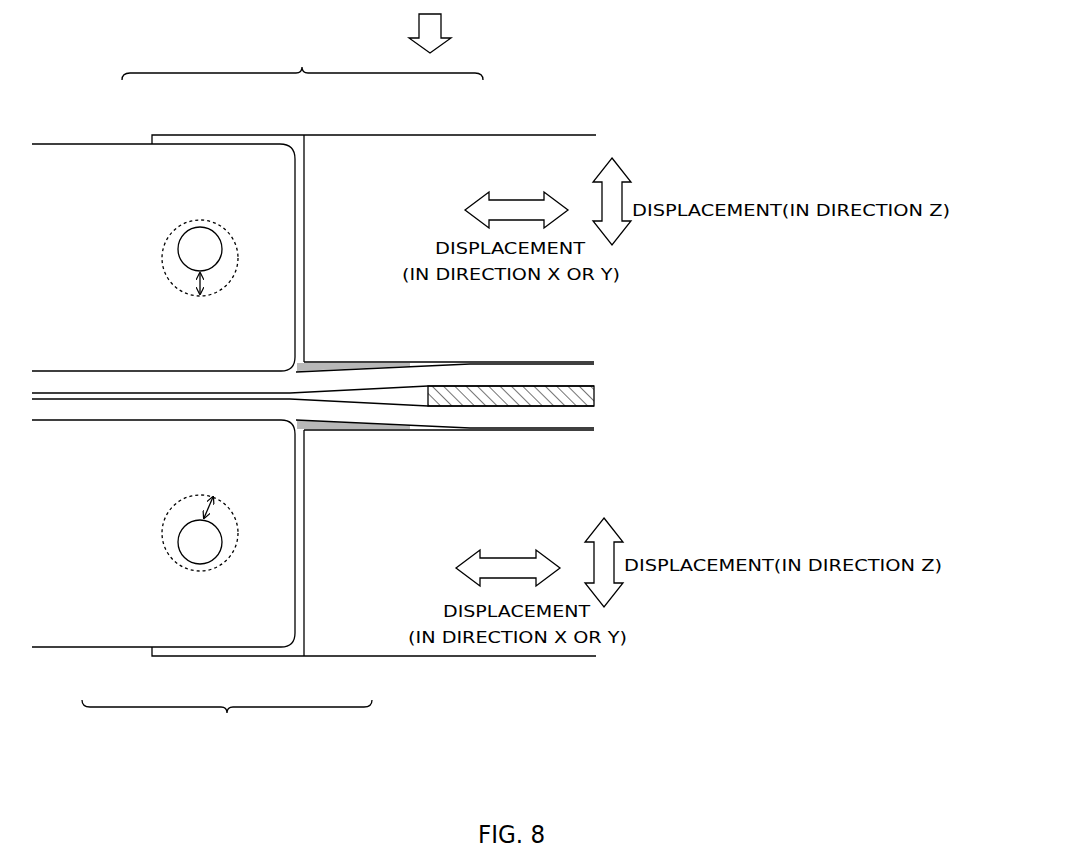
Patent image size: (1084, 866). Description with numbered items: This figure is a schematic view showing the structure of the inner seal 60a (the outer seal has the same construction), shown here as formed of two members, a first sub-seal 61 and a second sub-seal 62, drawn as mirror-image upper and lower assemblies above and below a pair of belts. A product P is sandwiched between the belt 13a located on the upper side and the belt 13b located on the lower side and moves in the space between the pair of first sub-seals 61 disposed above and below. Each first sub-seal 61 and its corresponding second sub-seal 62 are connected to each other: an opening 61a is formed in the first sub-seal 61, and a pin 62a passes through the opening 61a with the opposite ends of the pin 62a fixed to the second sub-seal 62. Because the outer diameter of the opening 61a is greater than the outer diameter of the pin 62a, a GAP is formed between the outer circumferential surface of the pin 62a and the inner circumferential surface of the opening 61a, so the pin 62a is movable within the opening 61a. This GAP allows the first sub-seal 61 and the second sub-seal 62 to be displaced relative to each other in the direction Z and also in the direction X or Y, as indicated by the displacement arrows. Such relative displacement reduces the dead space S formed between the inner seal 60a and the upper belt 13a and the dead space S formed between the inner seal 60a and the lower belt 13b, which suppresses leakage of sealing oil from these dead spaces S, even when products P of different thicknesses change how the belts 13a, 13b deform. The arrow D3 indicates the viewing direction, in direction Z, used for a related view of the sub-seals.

The second sub-seal 62 is at (134, 162).
The first sub-seal 61 is at (464, 161).
The pin 62a is at (195, 252).
The opening 61a is at (178, 290).
The belt 13a is at (530, 373).
The belt 13b is at (537, 431).
The inner seal 60a is at (282, 394).
The product P is at (473, 394).
The dead space S is at (320, 356).
The gap GAP is at (218, 292).
The arrow D3 is at (442, 33).